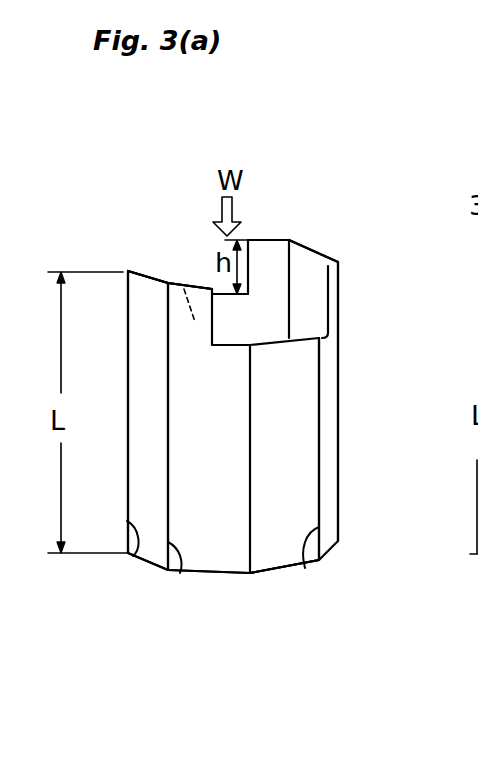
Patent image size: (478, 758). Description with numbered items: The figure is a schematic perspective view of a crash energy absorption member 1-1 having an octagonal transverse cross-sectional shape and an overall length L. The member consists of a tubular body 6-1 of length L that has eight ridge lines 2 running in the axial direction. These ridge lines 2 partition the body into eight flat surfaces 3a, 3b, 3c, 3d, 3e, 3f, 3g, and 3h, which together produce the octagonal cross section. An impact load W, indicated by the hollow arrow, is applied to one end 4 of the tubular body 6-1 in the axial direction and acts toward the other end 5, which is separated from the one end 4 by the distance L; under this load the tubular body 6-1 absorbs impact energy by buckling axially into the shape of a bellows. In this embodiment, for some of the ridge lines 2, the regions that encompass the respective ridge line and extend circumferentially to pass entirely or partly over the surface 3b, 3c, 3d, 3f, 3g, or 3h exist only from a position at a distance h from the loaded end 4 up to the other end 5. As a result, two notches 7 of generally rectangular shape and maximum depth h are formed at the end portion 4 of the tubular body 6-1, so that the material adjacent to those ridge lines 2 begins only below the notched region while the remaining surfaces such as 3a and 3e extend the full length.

The crash energy absorption member 1-1 is at (329, 207).
The ridge lines 2 is at (133, 556).
The flat surface 3a is at (140, 433).
The flat surface 3b is at (215, 525).
The flat surface 3c is at (280, 447).
The flat surface 3d is at (327, 400).
The flat surface 3e is at (318, 251).
The flat surface 3f is at (263, 240).
The flat surface 3g is at (172, 282).
The flat surface 3h is at (129, 271).
The one end 4 is at (277, 240).
The other end 5 is at (263, 573).
The tubular body 6-1 is at (339, 362).
The notches 7 is at (216, 290).